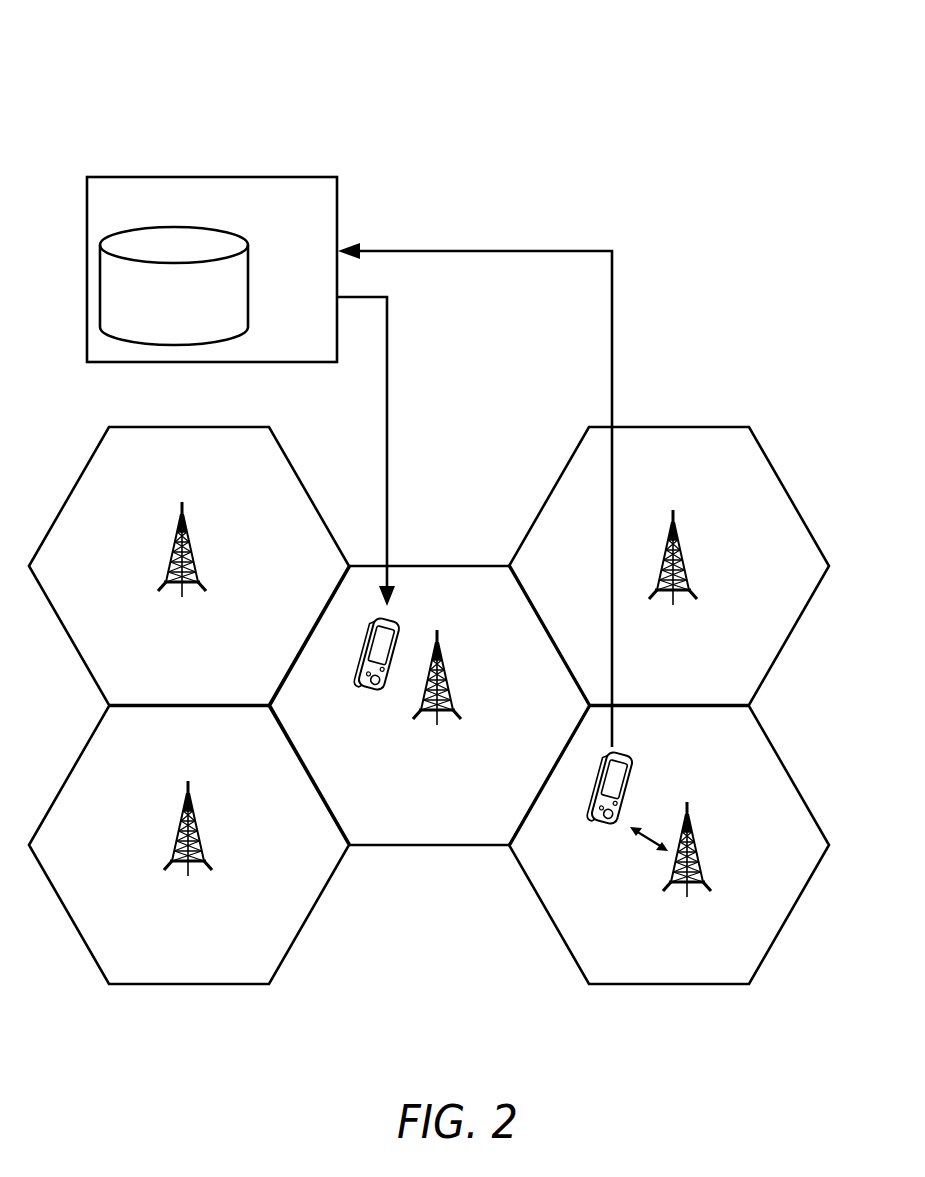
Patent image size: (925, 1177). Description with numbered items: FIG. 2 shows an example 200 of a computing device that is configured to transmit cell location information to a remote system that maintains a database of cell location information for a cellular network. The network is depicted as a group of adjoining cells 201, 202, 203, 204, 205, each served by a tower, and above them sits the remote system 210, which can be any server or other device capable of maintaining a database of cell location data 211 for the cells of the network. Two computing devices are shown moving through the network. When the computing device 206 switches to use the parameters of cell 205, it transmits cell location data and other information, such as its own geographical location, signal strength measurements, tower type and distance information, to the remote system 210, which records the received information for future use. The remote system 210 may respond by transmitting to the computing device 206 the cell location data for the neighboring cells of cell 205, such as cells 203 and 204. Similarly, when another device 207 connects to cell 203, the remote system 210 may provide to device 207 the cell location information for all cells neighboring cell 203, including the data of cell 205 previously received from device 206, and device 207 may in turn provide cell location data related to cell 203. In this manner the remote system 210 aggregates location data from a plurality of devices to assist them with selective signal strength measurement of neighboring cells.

The example 200 is at (117, 98).
The cell 201 is at (189, 566).
The cell 202 is at (189, 845).
The cell 203 is at (430, 705).
The cell 204 is at (669, 566).
The cell 205 is at (669, 845).
The computing device 206 is at (595, 827).
The device 207 is at (368, 692).
The remote system 210 is at (212, 269).
The cell location data 211 is at (174, 286).